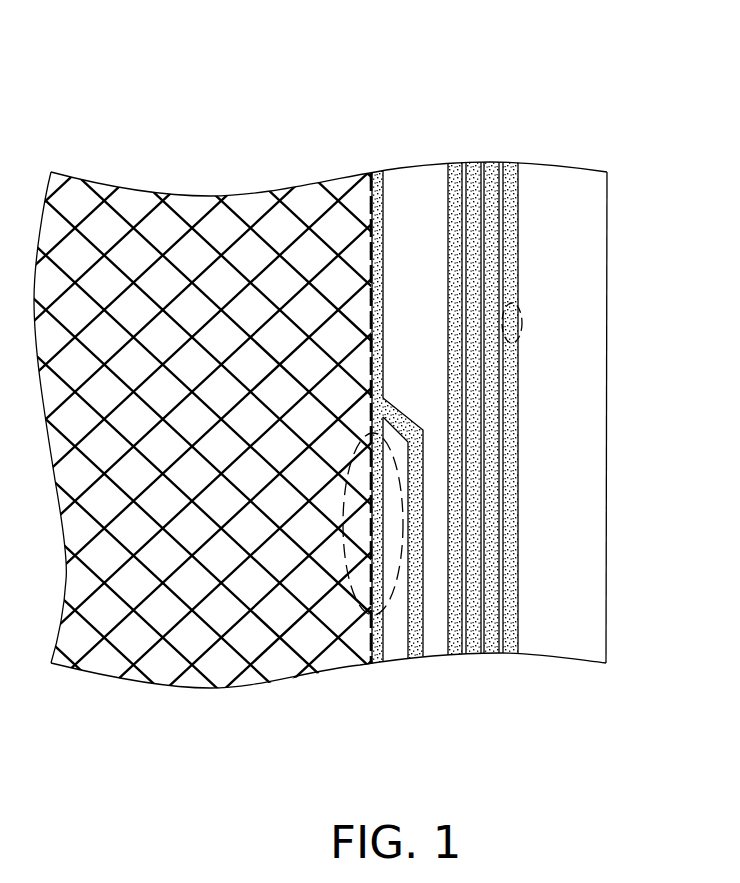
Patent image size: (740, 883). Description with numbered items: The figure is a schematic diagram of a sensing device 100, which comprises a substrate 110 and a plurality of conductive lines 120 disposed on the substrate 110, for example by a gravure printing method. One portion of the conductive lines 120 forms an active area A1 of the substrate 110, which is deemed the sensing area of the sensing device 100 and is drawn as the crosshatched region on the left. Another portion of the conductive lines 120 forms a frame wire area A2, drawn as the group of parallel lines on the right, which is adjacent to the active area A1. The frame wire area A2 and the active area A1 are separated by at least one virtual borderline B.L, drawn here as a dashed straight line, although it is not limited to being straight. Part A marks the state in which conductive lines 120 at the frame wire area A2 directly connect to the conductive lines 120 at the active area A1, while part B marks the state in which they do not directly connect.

The sensing device 100 is at (660, 59).
The substrate 110 is at (608, 186).
The conductive lines 120 is at (297, 215).
The active area A1 is at (206, 164).
The frame wire area A2 is at (484, 153).
The part A is at (415, 457).
The part B is at (520, 310).
The virtual borderline B.L is at (372, 640).